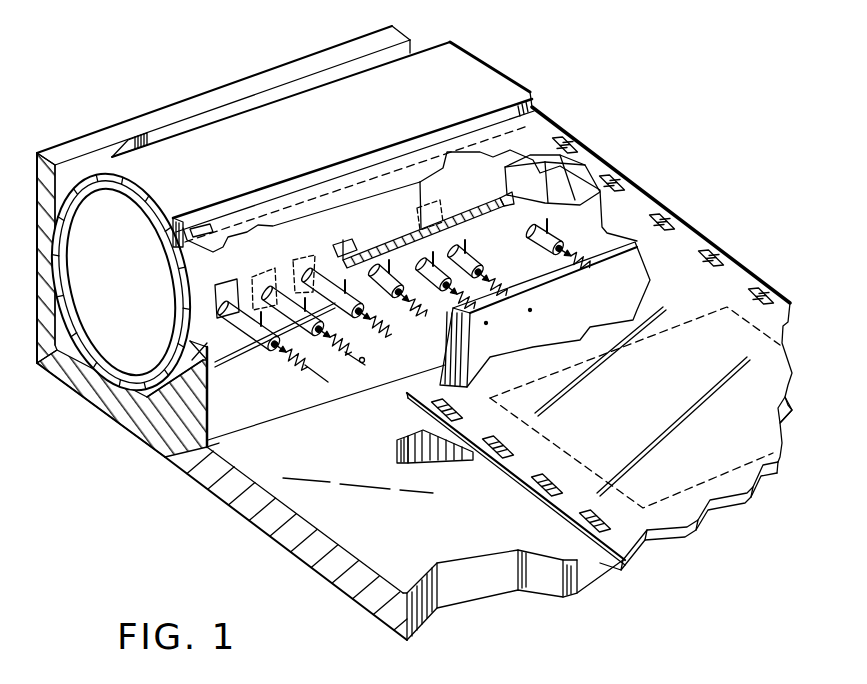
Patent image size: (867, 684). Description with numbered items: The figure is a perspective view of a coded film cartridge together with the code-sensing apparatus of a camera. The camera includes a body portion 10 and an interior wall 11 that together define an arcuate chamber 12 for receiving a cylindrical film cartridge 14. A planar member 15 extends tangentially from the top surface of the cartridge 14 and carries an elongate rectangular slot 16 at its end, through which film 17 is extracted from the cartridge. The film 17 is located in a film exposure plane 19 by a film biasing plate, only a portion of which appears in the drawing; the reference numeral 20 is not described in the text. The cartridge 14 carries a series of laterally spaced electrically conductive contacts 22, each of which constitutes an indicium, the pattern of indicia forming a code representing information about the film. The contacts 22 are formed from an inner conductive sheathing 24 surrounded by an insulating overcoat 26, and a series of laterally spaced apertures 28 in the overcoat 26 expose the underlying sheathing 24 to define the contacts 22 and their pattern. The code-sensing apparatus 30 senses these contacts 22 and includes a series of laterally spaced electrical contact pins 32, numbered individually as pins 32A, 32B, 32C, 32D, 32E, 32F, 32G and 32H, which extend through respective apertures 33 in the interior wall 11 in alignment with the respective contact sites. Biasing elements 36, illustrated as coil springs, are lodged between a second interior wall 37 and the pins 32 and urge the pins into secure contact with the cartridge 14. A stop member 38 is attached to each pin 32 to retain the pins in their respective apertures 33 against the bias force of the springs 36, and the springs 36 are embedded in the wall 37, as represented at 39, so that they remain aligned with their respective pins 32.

The body portion 10 is at (52, 347).
The interior wall 11 is at (190, 477).
The arcuate chamber 12 is at (145, 410).
The film cartridge 14 is at (450, 42).
The planar member 15 is at (535, 103).
The elongate rectangular slot 16 is at (177, 220).
The film 17 is at (547, 125).
The film exposure plane 19 is at (727, 307).
The fitting block 20 is at (560, 170).
The electrically conductive contacts 22 is at (215, 285).
The inner conductive sheathing 24 is at (73, 206).
The insulating overcoat 26 is at (113, 393).
The apertures 28 is at (215, 310).
The code-sensing apparatus 30 is at (565, 228).
The electrical contact pins 32 is at (270, 350).
The electrical contact pin 32A is at (222, 332).
The electrical contact pin 32B is at (312, 362).
The electrical contact pin 32C is at (313, 272).
The electrical contact pin 32D is at (400, 273).
The electrical contact pin 32E is at (436, 276).
The electrical contact pin 32F is at (472, 260).
The electrical contact pin 32G is at (540, 240).
The electrical contact pin 32H is at (553, 240).
The apertures 33 is at (378, 318).
The biasing elements 36 is at (360, 364).
The second interior wall 37 is at (407, 395).
The stop member 38 is at (571, 290).
The embedment of springs in wall 39 is at (573, 307).